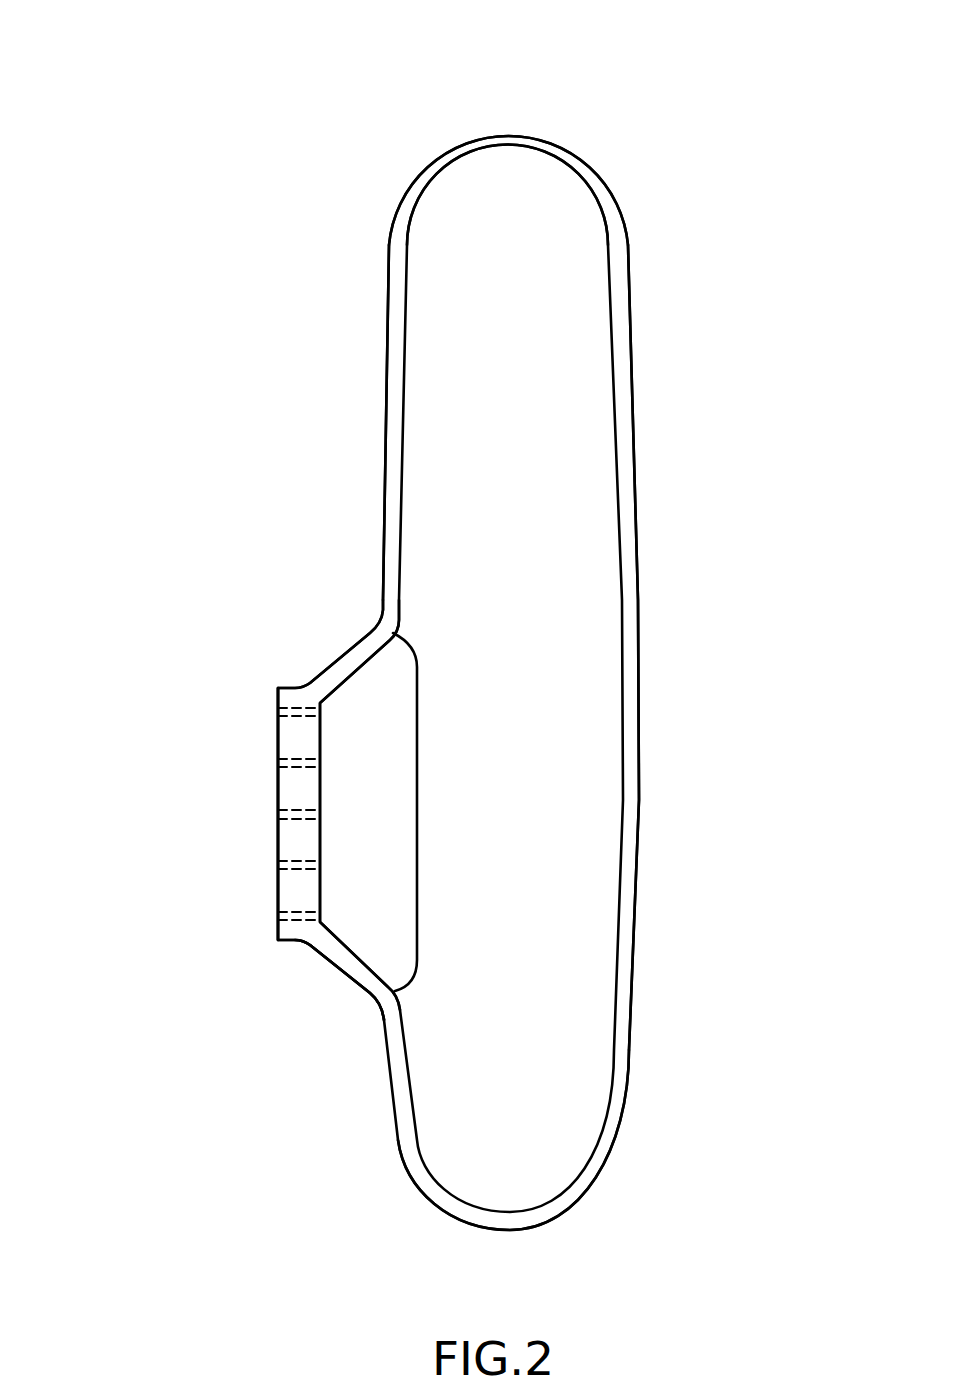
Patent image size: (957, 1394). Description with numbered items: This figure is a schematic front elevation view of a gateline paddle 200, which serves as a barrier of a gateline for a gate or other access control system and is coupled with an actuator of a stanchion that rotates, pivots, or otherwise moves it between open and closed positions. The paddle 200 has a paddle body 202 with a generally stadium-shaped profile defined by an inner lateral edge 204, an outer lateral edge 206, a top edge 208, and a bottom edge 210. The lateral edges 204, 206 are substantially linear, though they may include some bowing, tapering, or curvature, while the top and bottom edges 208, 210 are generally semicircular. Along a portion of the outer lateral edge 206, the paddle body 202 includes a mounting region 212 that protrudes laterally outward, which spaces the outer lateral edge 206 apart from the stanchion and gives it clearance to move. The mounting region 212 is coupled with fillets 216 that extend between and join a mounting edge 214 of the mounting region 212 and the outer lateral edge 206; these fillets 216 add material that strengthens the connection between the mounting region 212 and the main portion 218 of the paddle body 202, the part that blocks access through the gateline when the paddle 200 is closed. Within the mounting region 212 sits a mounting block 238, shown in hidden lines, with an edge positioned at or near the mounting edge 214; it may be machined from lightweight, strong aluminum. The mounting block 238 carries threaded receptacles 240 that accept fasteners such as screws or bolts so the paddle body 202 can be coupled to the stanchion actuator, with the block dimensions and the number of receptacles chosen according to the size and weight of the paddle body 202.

The gateline paddle 200 is at (414, 651).
The paddle body 202 is at (560, 845).
The inner lateral edge 204 is at (649, 631).
The outer lateral edge 206 is at (381, 488).
The top edge 208 is at (495, 121).
The bottom edge 210 is at (499, 1235).
The mounting region 212 is at (240, 703).
The mounting edge 214 is at (276, 785).
The fillets 216 is at (348, 962).
The main portion 218 is at (457, 281).
The mounting block 238 is at (295, 840).
The threaded receptacles 240 is at (298, 865).